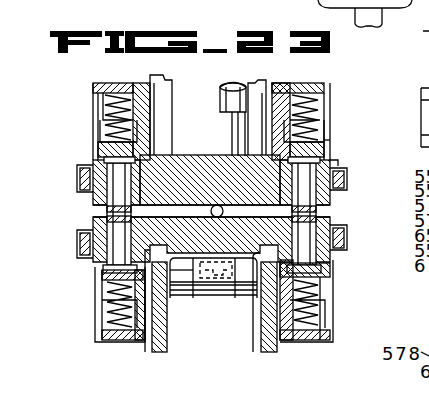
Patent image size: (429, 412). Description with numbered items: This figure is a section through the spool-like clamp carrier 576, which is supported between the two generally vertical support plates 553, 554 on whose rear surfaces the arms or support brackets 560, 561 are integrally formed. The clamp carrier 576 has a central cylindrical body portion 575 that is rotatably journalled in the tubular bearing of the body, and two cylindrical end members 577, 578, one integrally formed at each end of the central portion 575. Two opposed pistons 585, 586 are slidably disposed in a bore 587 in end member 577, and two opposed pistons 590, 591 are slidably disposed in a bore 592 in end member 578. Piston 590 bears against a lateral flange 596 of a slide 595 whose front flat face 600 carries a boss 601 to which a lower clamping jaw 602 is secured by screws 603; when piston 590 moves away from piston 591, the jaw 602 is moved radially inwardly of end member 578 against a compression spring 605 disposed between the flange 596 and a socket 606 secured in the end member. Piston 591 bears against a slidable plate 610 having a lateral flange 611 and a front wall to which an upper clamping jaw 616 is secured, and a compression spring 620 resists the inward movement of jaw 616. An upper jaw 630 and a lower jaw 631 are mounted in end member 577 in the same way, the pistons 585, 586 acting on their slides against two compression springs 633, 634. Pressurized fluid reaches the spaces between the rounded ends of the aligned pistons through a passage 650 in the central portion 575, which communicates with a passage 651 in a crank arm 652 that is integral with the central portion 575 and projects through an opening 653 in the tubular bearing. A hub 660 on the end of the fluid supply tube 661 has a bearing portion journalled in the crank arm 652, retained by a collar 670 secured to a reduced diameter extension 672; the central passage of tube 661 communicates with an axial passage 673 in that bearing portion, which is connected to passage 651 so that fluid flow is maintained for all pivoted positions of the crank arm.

The arm or support bracket 560 is at (150, 78).
The arm or support bracket 561 is at (262, 80).
The compression spring 633 is at (107, 105).
The compression spring 634 is at (130, 320).
The socket 606 is at (333, 87).
The compression spring 605 is at (315, 107).
The front flat face 600 is at (325, 118).
The slide 595 is at (352, 133).
The lateral flange 596 is at (333, 140).
The piston 590 is at (338, 163).
The upper clamping jaw 616 is at (347, 177).
The bore 592 is at (333, 193).
The screws 603 is at (337, 230).
The lower clamping jaw 602 is at (345, 235).
The boss 601 is at (337, 257).
The piston 591 is at (323, 265).
The lateral flange 611 is at (333, 283).
The slidable plate 610 is at (339, 296).
The compression spring 620 is at (333, 325).
The cylindrical end member 578 is at (344, 352).
The central cylindrical body portion 575 is at (104, 145).
The piston 585 is at (104, 162).
The upper jaw 630 is at (80, 177).
The bore 587 is at (110, 202).
The lower jaw 631 is at (80, 243).
The piston 586 is at (113, 255).
The reduced diameter extension 672 is at (170, 272).
The collar 670 is at (173, 284).
The cylindrical end member 577 is at (120, 348).
The opening 653 is at (193, 258).
The passage 651 is at (236, 300).
The crank arm 652 is at (244, 300).
The axial passage 673 is at (250, 298).
The hub 660 is at (256, 298).
The support plate 553 is at (161, 353).
The support plate 554 is at (277, 357).
The fluid supply tube 661 is at (232, 127).
The spool-like clamp carrier 576 is at (230, 167).
The passage 650 is at (190, 207).